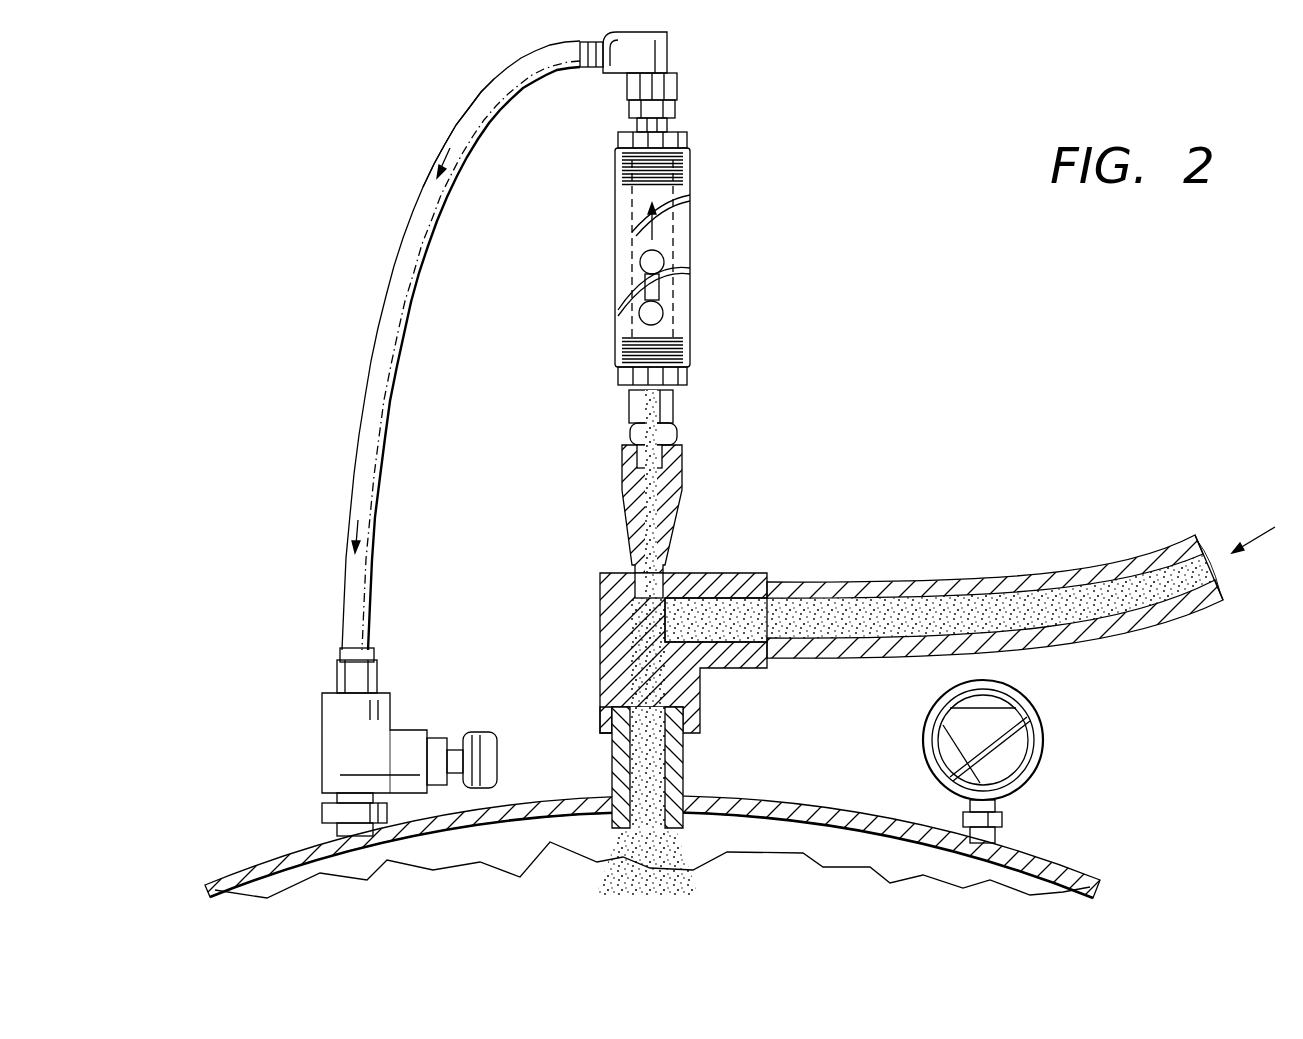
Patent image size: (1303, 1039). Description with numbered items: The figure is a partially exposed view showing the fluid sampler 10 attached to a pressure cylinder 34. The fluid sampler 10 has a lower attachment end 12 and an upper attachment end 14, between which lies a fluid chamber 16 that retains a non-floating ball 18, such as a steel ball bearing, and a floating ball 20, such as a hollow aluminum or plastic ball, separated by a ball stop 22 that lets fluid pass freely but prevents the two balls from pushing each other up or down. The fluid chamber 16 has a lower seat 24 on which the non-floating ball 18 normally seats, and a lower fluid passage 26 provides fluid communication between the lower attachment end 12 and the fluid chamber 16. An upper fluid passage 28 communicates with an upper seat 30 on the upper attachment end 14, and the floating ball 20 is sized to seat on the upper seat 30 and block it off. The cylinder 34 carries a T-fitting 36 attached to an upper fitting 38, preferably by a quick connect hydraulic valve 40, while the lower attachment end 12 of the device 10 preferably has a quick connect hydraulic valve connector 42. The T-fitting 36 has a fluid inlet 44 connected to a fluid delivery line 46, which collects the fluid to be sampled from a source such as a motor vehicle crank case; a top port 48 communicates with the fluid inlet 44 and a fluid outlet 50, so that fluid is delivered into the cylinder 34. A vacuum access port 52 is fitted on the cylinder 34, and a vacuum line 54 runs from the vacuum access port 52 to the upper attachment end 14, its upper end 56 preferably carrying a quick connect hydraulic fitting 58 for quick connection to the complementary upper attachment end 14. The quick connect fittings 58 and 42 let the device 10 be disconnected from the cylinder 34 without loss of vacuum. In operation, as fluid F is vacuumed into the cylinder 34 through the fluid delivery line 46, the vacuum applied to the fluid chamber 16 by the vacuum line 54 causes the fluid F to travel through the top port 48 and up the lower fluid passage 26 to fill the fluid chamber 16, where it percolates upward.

The fluid sampler 10 is at (785, 262).
The lower attachment end 12 is at (633, 402).
The upper attachment end 14 is at (673, 108).
The fluid chamber 16 is at (633, 232).
The non-floating ball 18 is at (665, 313).
The floating ball 20 is at (663, 262).
The ball stop 22 is at (633, 282).
The lower seat 24 is at (673, 330).
The lower fluid passage 26 is at (677, 432).
The upper fluid passage 28 is at (647, 125).
The upper seat 30 is at (633, 183).
The pressure cylinder 34 is at (1027, 873).
The T-fitting 36 is at (600, 618).
The upper fitting 38 is at (620, 770).
The quick connect hydraulic valve 40 is at (600, 720).
The quick connect hydraulic valve connector 42 is at (680, 507).
The fluid inlet 44 is at (733, 583).
The fluid delivery line 46 is at (987, 588).
The top port 48 is at (647, 593).
The fluid outlet 50 is at (653, 778).
The vacuum access port 52 is at (340, 737).
The vacuum line 54 is at (380, 368).
The upper end of the vacuum line 56 is at (480, 100).
The quick connect hydraulic fitting 58 is at (673, 52).
The fluid F is at (893, 620).